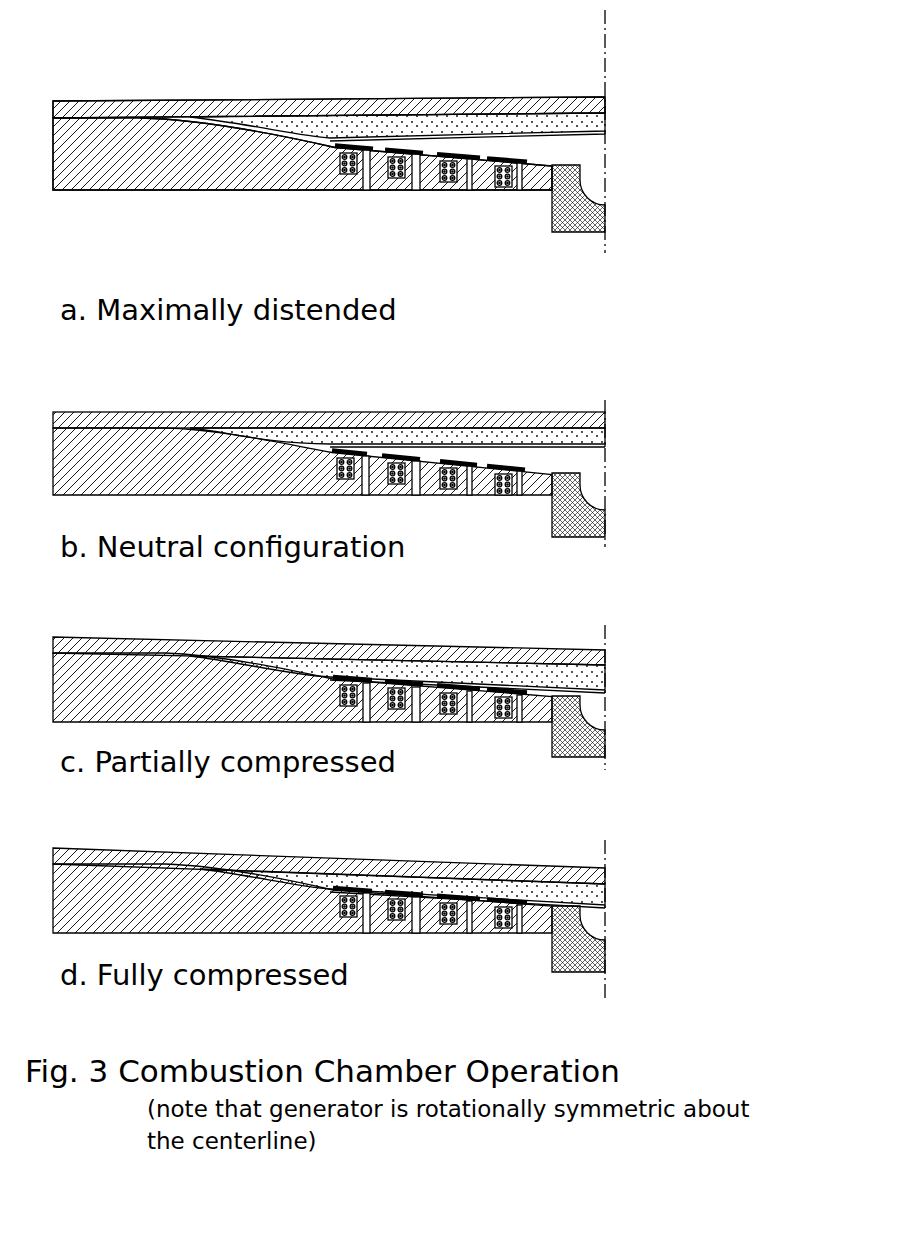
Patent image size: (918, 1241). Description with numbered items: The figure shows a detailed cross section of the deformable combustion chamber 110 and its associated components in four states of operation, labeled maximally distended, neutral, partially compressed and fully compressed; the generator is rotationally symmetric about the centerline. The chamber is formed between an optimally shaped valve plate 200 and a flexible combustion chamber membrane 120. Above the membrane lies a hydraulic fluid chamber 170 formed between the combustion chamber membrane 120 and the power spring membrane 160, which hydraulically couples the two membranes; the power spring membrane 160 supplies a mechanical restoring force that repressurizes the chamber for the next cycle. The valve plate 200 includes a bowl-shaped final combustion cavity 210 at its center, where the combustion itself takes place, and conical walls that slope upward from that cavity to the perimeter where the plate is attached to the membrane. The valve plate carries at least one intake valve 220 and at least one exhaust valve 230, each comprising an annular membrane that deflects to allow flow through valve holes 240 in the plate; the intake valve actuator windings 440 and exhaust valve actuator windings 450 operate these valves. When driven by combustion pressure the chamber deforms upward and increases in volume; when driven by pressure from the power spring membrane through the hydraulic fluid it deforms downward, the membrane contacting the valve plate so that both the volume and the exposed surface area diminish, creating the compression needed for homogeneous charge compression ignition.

The valve plate 200 is at (203, 128).
The combustion chamber membrane 120 is at (347, 128).
The power spring membrane 160 is at (353, 110).
The exhaust valve 230 is at (520, 167).
The hydraulic fluid chamber 170 is at (593, 122).
The deformable combustion chamber 110 is at (597, 142).
The final combustion cavity 210 is at (607, 202).
The valve holes 240 is at (520, 188).
The intake valve 220 is at (467, 158).
The exhaust valve actuator windings 450 is at (467, 188).
The intake valve actuator windings 440 is at (465, 188).